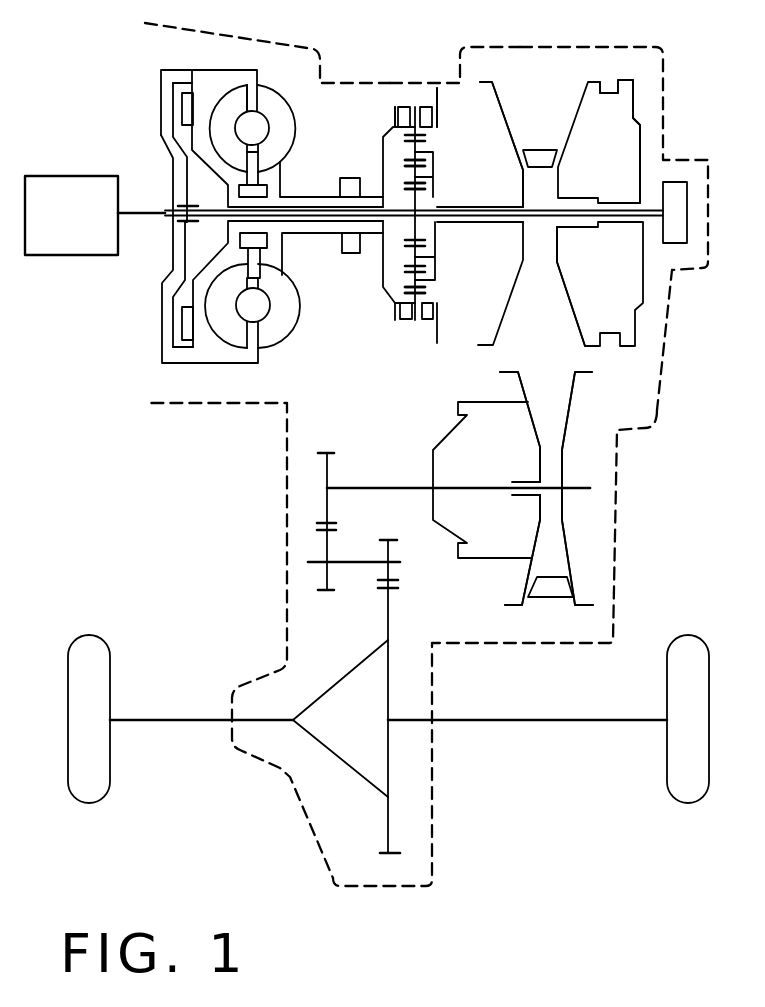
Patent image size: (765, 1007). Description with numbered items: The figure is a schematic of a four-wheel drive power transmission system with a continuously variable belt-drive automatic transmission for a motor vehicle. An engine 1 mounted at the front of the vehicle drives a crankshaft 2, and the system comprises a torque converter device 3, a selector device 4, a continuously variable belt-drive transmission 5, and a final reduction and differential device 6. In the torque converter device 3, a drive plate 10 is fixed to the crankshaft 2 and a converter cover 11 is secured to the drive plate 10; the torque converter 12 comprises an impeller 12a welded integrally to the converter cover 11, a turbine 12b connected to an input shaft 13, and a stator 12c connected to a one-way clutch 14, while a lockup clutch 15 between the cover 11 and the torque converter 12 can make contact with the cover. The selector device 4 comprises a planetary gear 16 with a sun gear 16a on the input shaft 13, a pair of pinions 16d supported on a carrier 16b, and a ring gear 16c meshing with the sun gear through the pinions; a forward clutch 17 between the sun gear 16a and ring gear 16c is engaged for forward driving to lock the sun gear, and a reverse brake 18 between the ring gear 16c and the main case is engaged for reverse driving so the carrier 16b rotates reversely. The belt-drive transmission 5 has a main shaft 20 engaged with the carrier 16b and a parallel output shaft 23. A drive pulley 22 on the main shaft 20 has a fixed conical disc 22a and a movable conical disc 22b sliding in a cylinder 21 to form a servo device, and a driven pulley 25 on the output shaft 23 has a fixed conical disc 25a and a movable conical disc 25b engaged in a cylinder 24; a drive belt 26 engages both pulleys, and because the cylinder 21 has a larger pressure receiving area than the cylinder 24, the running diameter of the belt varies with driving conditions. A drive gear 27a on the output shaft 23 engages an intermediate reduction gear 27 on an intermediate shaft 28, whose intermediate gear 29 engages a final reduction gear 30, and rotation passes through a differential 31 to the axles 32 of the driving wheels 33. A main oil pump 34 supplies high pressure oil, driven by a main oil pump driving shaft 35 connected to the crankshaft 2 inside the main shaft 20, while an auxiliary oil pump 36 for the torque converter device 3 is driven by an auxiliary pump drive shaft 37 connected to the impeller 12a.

The engine 1 is at (99, 176).
The crankshaft 2 is at (158, 219).
The torque converter device 3 is at (265, 70).
The selector device 4 is at (374, 120).
The continuously variable belt-drive transmission 5 is at (566, 47).
The final reduction and differential device 6 is at (400, 697).
The drive plate 10 is at (173, 188).
The converter cover 11 is at (173, 135).
The torque converter 12 is at (295, 130).
The impeller 12a is at (277, 104).
The turbine 12b is at (233, 103).
The stator 12c is at (262, 278).
The input shaft 13 is at (372, 197).
The one-way clutch 14 is at (262, 243).
The lockup clutch 15 is at (173, 103).
The planetary gear 16 is at (469, 178).
The sun gear 16a is at (437, 187).
The carrier 16b is at (437, 163).
The ring gear 16c is at (415, 107).
The pinions 16d is at (427, 287).
The forward clutch 17 is at (403, 103).
The reverse brake 18 is at (432, 124).
The main shaft 20 is at (507, 223).
The cylinder 21 is at (592, 181).
The drive pulley 22 is at (531, 111).
The fixed conical disc 22a is at (503, 102).
The movable conical disc 22b is at (577, 327).
The output shaft 23 is at (397, 487).
The cylinder 24 is at (485, 465).
The driven pulley 25 is at (578, 430).
The fixed conical disc 25a is at (563, 538).
The movable conical disc 25b is at (525, 383).
The drive belt 26 is at (547, 157).
The intermediate reduction gear 27 is at (320, 593).
The drive gear 27a is at (320, 460).
The intermediate shaft 28 is at (350, 563).
The intermediate gear 29 is at (385, 538).
The final reduction gear 30 is at (385, 853).
The differential 31 is at (360, 747).
The axles 32 is at (188, 722).
The driving wheels 33 is at (103, 673).
The main oil pump 34 is at (675, 244).
The main oil pump driving shaft 35 is at (619, 218).
The auxiliary oil pump 36 is at (352, 254).
The auxiliary pump drive shaft 37 is at (320, 197).